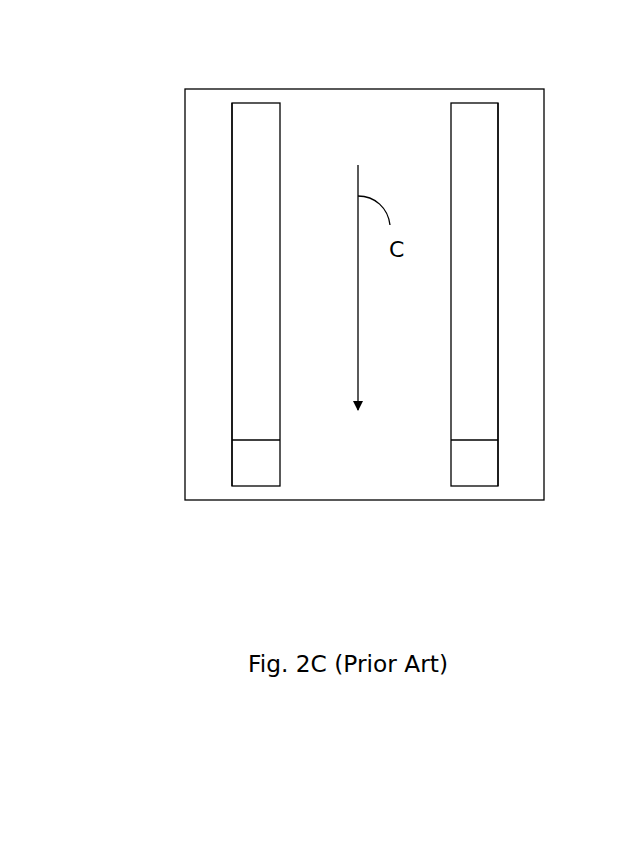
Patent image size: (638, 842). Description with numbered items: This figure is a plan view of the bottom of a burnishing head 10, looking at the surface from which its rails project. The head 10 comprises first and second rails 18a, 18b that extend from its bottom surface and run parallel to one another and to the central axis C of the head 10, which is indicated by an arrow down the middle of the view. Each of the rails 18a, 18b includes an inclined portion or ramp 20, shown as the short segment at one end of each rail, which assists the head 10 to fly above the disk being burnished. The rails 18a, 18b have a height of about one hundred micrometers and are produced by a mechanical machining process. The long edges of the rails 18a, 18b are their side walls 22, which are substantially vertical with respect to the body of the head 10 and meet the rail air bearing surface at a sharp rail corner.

The head 10 is at (168, 258).
The first rail 18a is at (248, 103).
The second rail 18b is at (453, 103).
The ramp 20 is at (446, 487).
The rail side walls 22 is at (232, 320).